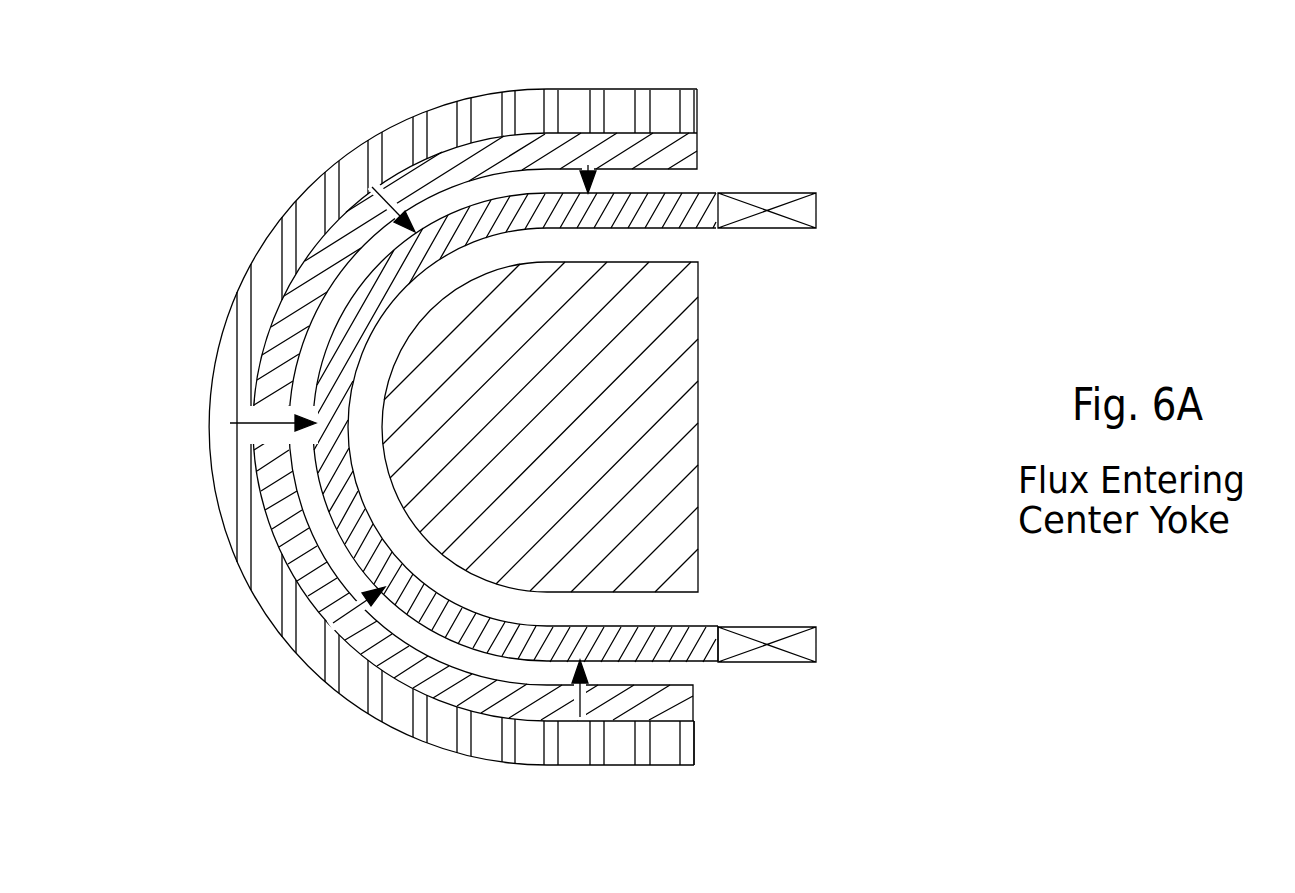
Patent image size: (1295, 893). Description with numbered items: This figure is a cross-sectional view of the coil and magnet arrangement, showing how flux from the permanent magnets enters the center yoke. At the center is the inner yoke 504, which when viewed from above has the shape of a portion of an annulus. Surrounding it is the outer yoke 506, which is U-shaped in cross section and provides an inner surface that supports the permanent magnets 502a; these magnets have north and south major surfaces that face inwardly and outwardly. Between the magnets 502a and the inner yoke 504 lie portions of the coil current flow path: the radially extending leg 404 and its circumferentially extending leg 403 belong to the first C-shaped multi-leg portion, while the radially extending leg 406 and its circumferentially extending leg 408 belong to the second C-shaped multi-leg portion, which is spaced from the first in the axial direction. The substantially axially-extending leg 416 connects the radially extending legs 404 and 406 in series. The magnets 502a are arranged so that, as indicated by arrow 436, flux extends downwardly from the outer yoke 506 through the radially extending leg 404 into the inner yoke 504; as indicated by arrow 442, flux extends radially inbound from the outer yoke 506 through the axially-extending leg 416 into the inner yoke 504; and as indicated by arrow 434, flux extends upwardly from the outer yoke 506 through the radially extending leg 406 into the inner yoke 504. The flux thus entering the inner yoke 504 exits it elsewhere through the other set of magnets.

The outer yoke 506 is at (440, 123).
The permanent magnets 502a is at (652, 145).
The radially extending leg 404 is at (686, 205).
The circumferentially extending leg 408 is at (772, 636).
The circumferentially extending leg 403 is at (816, 193).
The radially extending leg 406 is at (692, 650).
The inner yoke 504 is at (622, 460).
The arrow 436 is at (588, 170).
The arrow 442 is at (298, 420).
The substantially axially-extending leg 416 is at (340, 492).
The arrow 434 is at (580, 717).